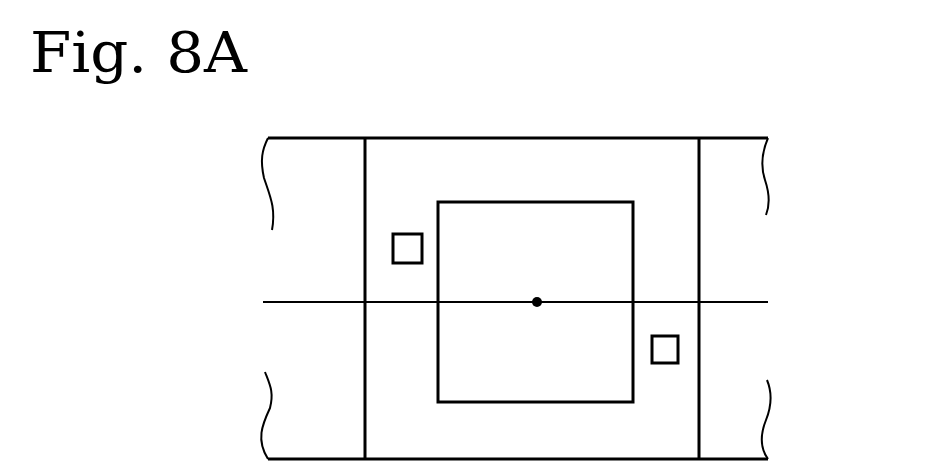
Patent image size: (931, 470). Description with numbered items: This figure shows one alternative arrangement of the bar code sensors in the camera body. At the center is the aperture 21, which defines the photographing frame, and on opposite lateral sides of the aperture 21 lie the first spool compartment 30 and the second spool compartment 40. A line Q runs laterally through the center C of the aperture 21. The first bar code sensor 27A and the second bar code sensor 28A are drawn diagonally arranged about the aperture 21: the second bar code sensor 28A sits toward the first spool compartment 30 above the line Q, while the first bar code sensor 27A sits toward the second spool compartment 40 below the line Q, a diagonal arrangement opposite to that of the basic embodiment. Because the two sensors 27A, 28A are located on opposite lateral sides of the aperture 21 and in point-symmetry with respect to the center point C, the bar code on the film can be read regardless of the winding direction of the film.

The first spool compartment 30 is at (287, 170).
The second spool compartment 40 is at (740, 150).
The aperture 21 is at (548, 202).
The second bar code sensor 28A is at (405, 230).
The first bar code sensor 27A is at (678, 343).
The line Q is at (746, 302).
The center C is at (539, 300).